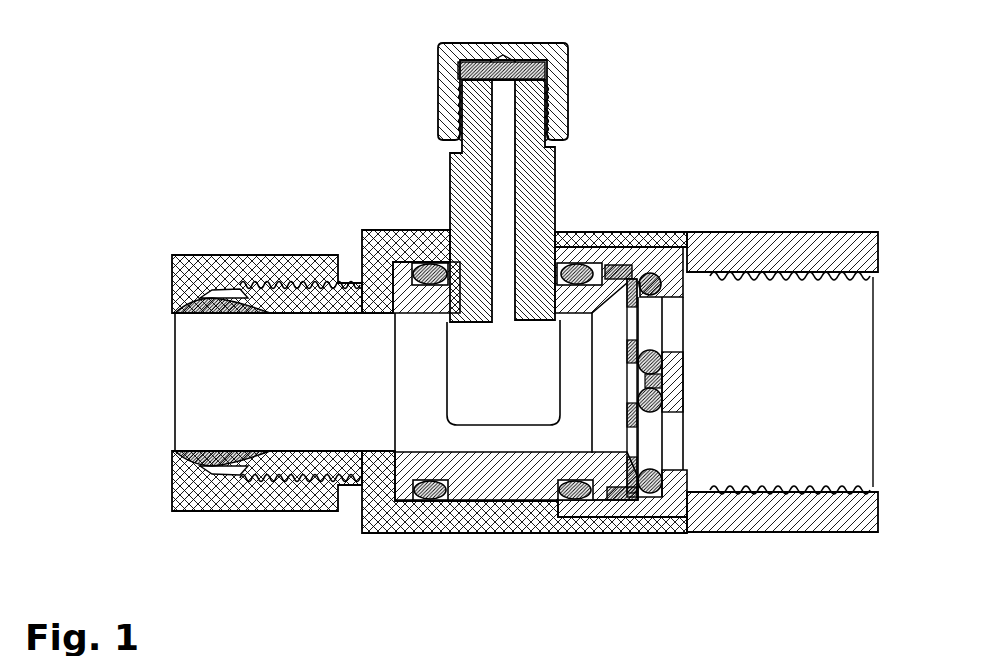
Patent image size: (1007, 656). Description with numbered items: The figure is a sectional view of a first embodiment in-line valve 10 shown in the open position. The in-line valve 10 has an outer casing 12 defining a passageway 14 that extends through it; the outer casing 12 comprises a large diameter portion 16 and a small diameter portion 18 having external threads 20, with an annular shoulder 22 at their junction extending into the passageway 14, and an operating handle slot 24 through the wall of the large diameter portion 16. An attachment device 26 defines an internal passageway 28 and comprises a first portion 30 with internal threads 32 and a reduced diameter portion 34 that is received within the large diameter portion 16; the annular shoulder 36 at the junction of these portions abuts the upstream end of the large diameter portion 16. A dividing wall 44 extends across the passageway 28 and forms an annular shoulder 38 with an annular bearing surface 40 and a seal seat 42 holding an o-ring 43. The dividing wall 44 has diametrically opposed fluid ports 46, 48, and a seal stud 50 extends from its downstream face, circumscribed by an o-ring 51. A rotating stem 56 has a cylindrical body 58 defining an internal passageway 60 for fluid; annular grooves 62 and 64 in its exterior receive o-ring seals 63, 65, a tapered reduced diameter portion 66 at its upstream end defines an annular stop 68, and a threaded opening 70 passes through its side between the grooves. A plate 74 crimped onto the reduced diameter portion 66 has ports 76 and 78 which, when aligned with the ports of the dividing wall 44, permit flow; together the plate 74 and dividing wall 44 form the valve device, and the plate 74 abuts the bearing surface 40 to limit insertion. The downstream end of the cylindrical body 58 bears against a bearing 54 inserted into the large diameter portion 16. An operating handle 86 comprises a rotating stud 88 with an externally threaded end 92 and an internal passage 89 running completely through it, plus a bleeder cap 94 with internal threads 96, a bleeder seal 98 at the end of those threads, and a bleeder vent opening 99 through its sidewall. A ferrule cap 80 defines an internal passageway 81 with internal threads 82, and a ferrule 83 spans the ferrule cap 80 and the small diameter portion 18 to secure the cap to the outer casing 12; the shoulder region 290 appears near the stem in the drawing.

The in-line valve 10 is at (230, 156).
The outer casing 12 is at (362, 230).
The passageway 14 is at (124, 378).
The large diameter portion 16 is at (560, 248).
The small diameter portion 18 is at (298, 313).
The external threads 20 is at (268, 254).
The annular shoulder 22 is at (405, 500).
The operating handle slot 24 is at (450, 262).
The attachment device 26 is at (832, 229).
The internal passageway 28 is at (815, 372).
The first portion 30 is at (856, 533).
The internal threads 32 is at (793, 486).
The reduced diameter portion 34 is at (642, 478).
The annular shoulder 36 is at (657, 490).
The annular shoulder 38 is at (685, 470).
The annular bearing surface 40 is at (630, 498).
The seal seat 42 is at (656, 279).
The o-ring 43 is at (668, 280).
The dividing wall 44 is at (660, 373).
The fluid port 46 is at (688, 307).
The fluid port 48 is at (683, 430).
The seal stud 50 is at (628, 362).
The o-ring 51 is at (663, 400).
The bearing 54 is at (428, 286).
The rotating stem 56 is at (398, 262).
The cylindrical body 58 is at (508, 490).
The internal passageway 60 is at (415, 404).
The annular groove 62 is at (412, 264).
The o-ring seal 63 is at (441, 498).
The annular groove 64 is at (577, 290).
The o-ring seal 65 is at (586, 498).
The reduced diameter portion 66 is at (590, 272).
The annular stop 68 is at (614, 266).
The threaded opening 70 is at (456, 300).
The plate 74 is at (634, 282).
The port 76 is at (630, 330).
The port 78 is at (632, 443).
The ferrule cap 80 is at (230, 514).
The internal passageway 81 is at (195, 338).
The internal threads 82 is at (290, 514).
The ferrule 83 is at (220, 318).
The operating handle 86 is at (572, 50).
The rotating stud 88 is at (558, 161).
The internal passage 89 is at (503, 285).
The externally threaded end 92 is at (551, 97).
The bleeder cap 94 is at (529, 43).
The internal threads 96 is at (452, 150).
The bleeder seal 98 is at (446, 56).
The bleeder vent opening 99 is at (548, 70).
The insert shoulder 290 is at (558, 300).